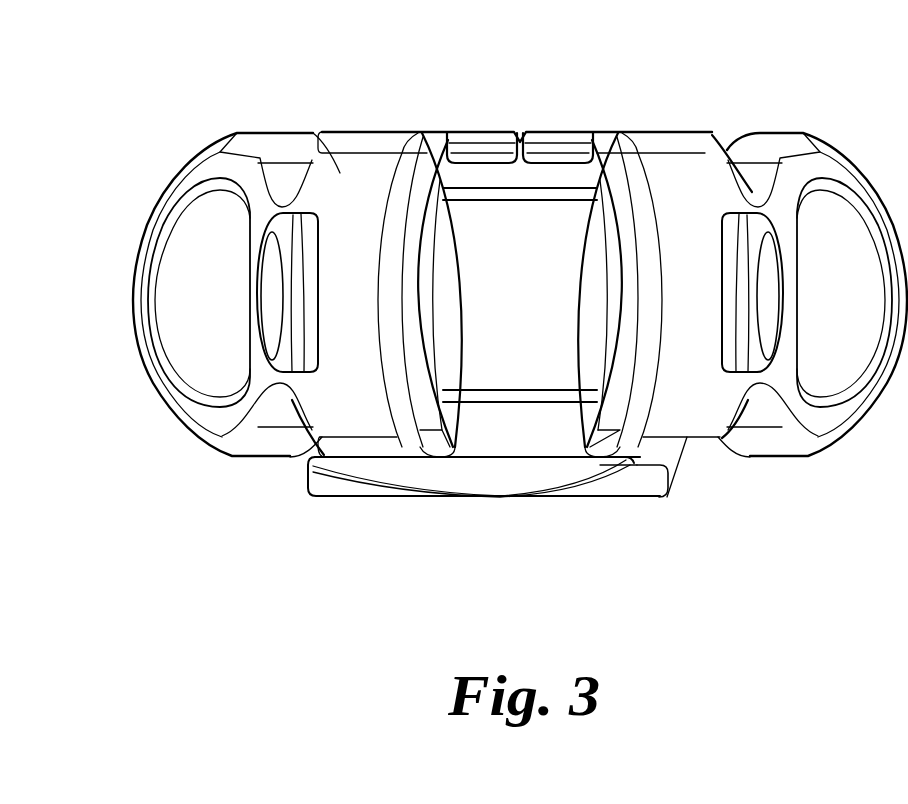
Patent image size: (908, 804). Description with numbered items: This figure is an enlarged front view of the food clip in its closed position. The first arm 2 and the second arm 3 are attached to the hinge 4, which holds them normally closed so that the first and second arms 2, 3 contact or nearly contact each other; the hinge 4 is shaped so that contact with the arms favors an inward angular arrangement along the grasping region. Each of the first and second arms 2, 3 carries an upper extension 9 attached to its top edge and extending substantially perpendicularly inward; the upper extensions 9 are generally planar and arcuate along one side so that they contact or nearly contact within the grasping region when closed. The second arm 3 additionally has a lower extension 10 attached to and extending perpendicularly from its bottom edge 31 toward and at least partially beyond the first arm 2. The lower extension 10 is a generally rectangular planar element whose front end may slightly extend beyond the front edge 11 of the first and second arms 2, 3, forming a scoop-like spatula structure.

The first arm 2 is at (292, 190).
The second arm 3 is at (690, 153).
The hinge 4 is at (545, 273).
The upper extension 9 is at (487, 133).
The lower extension 10 is at (424, 478).
The front edge 11 is at (417, 330).
The bottom edge 31 is at (662, 465).